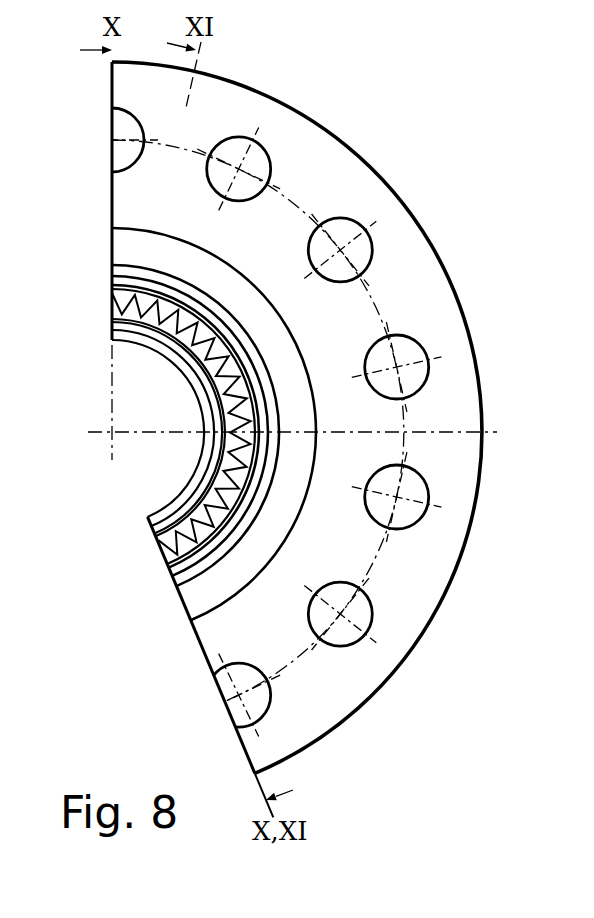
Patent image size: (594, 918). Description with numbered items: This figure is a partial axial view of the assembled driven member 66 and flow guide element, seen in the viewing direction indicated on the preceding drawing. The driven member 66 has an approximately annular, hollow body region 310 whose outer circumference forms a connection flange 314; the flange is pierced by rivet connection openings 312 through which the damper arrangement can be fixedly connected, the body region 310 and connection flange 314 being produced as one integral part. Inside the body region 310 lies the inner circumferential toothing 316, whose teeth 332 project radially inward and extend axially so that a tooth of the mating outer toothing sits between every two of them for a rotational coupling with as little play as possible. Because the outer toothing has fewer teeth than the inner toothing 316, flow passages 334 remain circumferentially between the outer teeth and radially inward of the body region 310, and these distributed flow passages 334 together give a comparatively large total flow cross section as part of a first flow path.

The driven member 66 is at (423, 167).
The body region 310 is at (330, 452).
The rivet connection openings 312 is at (355, 617).
The connection flange 314 is at (430, 298).
The inner circumferential toothing 316 is at (333, 433).
The teeth 332 is at (250, 388).
The flow passages 334 is at (165, 318).